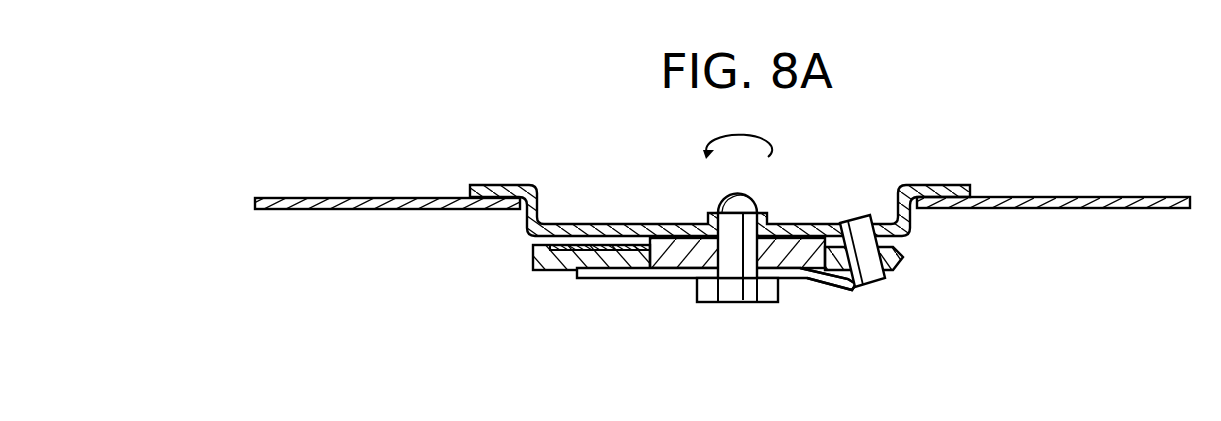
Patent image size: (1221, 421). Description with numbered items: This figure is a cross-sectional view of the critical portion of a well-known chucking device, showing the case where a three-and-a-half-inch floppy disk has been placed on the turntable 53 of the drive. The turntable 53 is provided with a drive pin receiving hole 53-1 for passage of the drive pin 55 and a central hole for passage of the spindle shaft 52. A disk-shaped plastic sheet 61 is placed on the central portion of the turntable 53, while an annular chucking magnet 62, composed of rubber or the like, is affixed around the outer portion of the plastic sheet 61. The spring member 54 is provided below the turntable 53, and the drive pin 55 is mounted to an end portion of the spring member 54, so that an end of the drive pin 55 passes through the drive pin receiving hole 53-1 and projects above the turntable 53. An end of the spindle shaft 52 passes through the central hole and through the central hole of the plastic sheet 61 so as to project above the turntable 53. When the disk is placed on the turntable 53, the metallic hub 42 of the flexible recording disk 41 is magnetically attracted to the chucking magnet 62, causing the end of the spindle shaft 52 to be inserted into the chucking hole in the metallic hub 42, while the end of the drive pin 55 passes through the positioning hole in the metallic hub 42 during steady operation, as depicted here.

The flexible recording disk 41 is at (1093, 200).
The metallic hub 42 is at (567, 222).
The spindle shaft 52 is at (742, 291).
The turntable 53 is at (674, 256).
The drive pin receiving hole 53-1 is at (545, 262).
The spring member 54 is at (837, 288).
The drive pin 55 is at (857, 228).
The plastic sheet 61 is at (608, 277).
The chucking magnet 62 is at (627, 245).